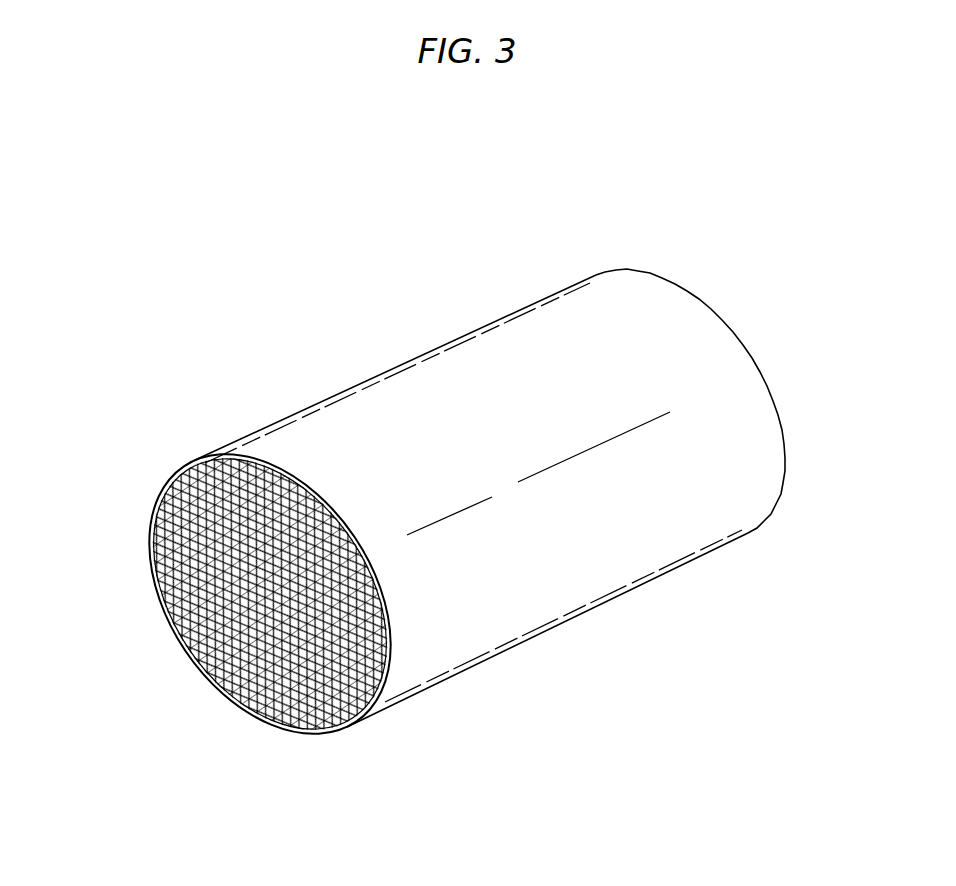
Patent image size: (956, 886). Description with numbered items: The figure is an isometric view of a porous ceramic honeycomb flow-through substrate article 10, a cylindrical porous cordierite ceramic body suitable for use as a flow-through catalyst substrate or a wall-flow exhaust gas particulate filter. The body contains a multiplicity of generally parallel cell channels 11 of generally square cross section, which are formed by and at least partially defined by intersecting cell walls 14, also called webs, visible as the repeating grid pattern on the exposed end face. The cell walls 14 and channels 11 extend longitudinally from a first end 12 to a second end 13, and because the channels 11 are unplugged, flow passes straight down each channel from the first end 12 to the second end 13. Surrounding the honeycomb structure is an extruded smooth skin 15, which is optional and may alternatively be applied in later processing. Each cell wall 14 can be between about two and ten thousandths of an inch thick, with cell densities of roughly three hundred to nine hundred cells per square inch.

The porous ceramic honeycomb flow-through substrate article 10 is at (786, 479).
The cell channels 11 is at (158, 560).
The first end 12 is at (158, 503).
The second end 13 is at (708, 300).
The cell walls 14 is at (185, 631).
The extruded smooth skin 15 is at (428, 386).